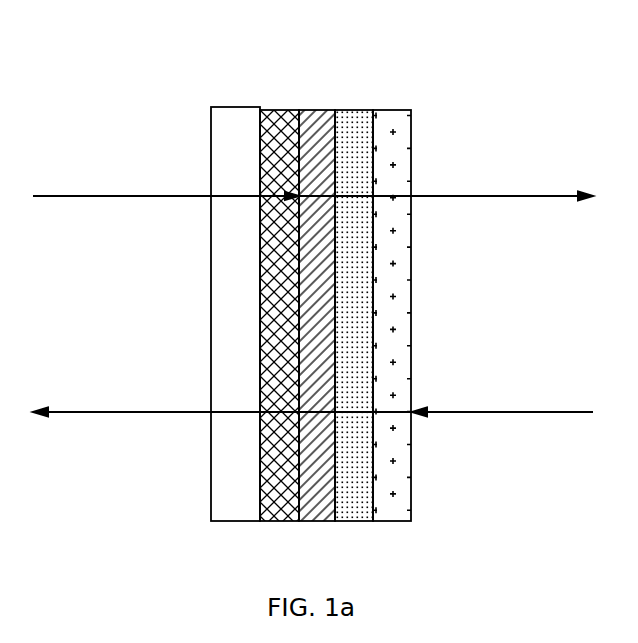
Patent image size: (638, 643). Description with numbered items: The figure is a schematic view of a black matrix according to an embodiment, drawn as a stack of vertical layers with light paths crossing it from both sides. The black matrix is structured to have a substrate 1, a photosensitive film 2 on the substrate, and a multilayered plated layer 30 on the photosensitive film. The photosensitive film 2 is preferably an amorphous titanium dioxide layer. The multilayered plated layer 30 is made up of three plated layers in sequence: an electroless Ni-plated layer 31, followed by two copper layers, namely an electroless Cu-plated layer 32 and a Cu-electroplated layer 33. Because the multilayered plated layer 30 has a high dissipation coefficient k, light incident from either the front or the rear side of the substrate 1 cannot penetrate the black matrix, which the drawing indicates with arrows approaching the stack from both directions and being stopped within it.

The substrate 1 is at (237, 107).
The photosensitive film 2 is at (280, 109).
The multilayered plated layer 30 is at (357, 266).
The electroless Ni-plated layer 31 is at (316, 110).
The electroless Cu-plated layer 32 is at (353, 110).
The Cu-electroplated layer 33 is at (394, 291).